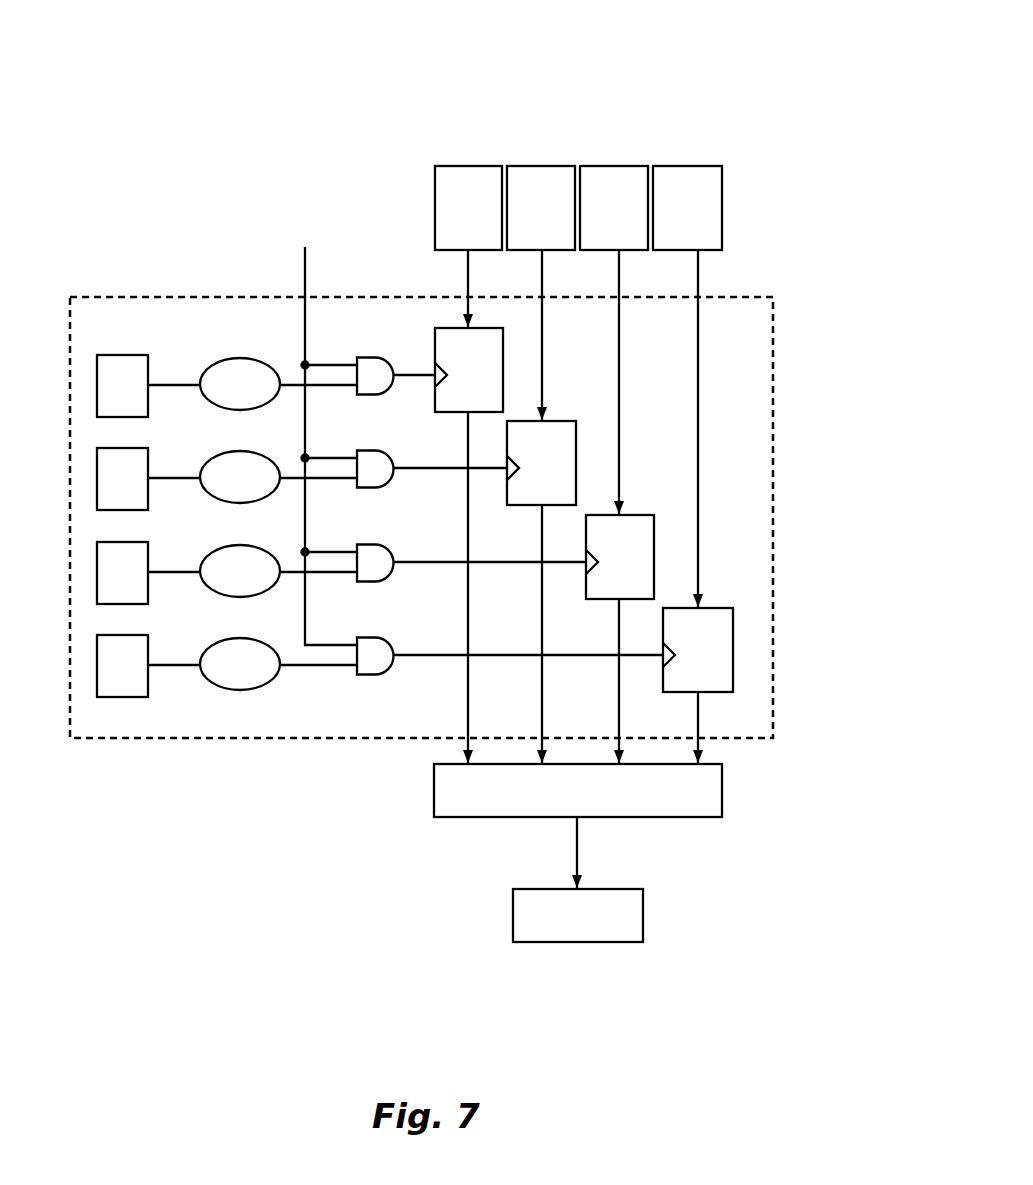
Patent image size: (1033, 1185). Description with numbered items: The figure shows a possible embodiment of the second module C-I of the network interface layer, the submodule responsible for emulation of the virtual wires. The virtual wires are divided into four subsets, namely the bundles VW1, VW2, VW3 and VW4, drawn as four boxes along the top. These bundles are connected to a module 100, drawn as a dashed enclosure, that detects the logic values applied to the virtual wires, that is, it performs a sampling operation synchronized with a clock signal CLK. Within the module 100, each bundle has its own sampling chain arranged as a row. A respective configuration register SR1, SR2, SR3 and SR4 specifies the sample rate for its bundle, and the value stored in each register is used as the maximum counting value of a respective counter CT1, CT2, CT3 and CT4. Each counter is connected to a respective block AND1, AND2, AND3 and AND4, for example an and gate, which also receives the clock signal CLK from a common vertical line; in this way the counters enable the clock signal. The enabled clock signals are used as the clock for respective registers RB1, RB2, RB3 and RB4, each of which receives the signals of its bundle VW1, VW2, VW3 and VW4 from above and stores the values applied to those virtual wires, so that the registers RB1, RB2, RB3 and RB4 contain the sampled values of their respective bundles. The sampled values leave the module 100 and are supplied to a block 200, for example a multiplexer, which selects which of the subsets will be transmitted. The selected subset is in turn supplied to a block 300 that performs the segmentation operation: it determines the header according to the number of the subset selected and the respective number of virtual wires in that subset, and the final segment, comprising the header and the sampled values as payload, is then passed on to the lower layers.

The second module C-I is at (168, 108).
The module for detecting the logic values applied to the virtual wires 100 is at (753, 296).
The block 200 is at (707, 820).
The block 300 is at (618, 944).
The clock signal CLK is at (320, 428).
The configuration register SR1 is at (112, 355).
The configuration register SR2 is at (112, 448).
The configuration register SR3 is at (112, 542).
The configuration register SR4 is at (112, 635).
The counter CT1 is at (210, 363).
The counter CT2 is at (210, 456).
The counter CT3 is at (210, 550).
The counter CT4 is at (210, 643).
The block AND1 is at (366, 355).
The block AND2 is at (366, 448).
The block AND3 is at (366, 542).
The block AND4 is at (366, 635).
The register RB1 is at (446, 414).
The register RB2 is at (569, 420).
The register RB3 is at (646, 514).
The register RB4 is at (725, 607).
The bundle of virtual wires VW1 is at (468, 464).
The bundle of virtual wires VW2 is at (541, 464).
The bundle of virtual wires VW3 is at (614, 464).
The bundle of virtual wires VW4 is at (687, 464).